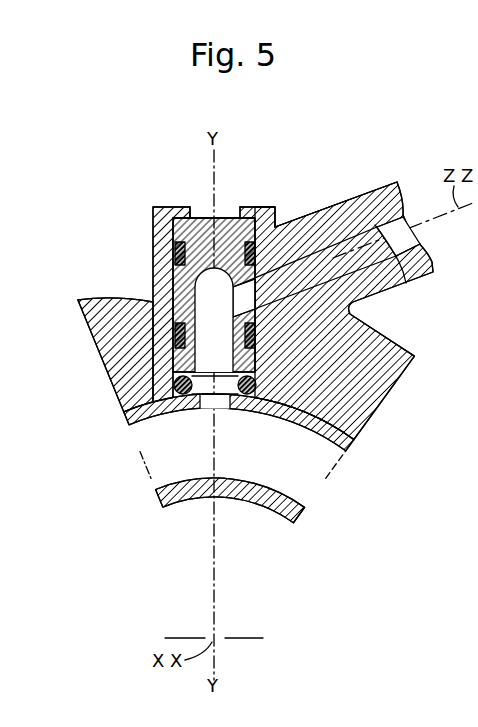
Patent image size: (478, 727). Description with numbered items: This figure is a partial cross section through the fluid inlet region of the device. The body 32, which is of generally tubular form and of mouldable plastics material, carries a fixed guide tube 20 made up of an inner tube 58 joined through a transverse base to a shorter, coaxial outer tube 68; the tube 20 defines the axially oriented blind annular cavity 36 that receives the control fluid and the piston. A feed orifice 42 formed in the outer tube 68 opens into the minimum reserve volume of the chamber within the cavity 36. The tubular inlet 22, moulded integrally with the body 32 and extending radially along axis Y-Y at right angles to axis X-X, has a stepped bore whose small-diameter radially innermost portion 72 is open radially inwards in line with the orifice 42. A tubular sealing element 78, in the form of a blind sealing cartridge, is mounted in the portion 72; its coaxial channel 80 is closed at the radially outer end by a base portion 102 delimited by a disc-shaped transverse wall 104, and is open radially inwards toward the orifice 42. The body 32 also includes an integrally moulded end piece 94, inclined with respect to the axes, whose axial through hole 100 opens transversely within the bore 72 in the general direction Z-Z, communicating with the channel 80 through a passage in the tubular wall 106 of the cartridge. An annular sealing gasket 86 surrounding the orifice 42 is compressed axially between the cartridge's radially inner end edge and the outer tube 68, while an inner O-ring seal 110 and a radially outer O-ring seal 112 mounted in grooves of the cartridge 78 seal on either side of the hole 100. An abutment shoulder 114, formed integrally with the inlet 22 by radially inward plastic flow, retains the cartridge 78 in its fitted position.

The guide tube 20 is at (312, 512).
The tubular inlet 22 is at (150, 228).
The body 32 is at (383, 403).
The blind annular cavity 36 is at (332, 478).
The feed orifice 42 is at (225, 408).
The inner tube 58 is at (190, 497).
The outer tube 68 is at (282, 422).
The radially innermost bore portion 72 is at (197, 274).
The tubular sealing element 78 is at (257, 356).
The coaxial channel 80 is at (174, 385).
The annular sealing gasket 86 is at (184, 413).
The end piece 94 is at (358, 197).
The axial through hole 100 is at (406, 271).
The base portion 102 is at (228, 222).
The transverse wall 104 is at (193, 212).
The tubular wall 106 is at (100, 303).
The inner O-ring seal 110 is at (192, 357).
The radially outer O-ring seal 112 is at (176, 253).
The abutment shoulder 114 is at (266, 216).